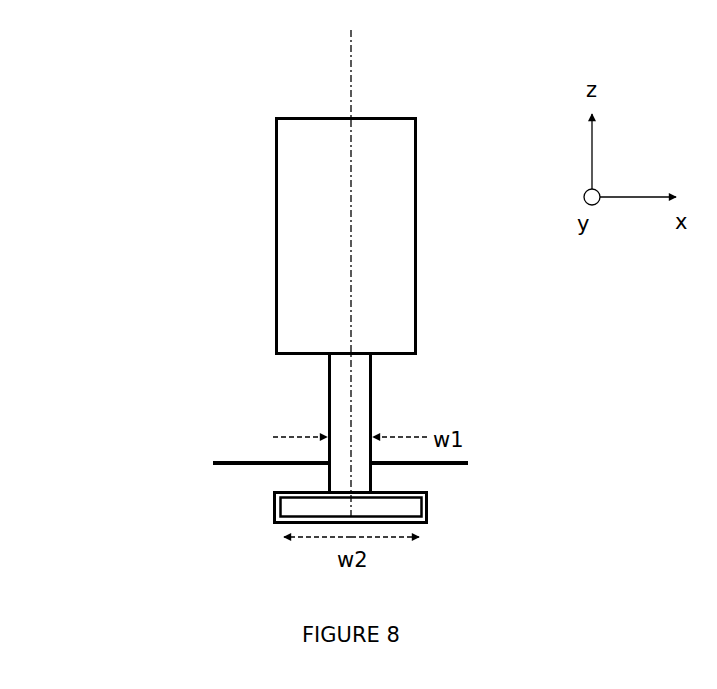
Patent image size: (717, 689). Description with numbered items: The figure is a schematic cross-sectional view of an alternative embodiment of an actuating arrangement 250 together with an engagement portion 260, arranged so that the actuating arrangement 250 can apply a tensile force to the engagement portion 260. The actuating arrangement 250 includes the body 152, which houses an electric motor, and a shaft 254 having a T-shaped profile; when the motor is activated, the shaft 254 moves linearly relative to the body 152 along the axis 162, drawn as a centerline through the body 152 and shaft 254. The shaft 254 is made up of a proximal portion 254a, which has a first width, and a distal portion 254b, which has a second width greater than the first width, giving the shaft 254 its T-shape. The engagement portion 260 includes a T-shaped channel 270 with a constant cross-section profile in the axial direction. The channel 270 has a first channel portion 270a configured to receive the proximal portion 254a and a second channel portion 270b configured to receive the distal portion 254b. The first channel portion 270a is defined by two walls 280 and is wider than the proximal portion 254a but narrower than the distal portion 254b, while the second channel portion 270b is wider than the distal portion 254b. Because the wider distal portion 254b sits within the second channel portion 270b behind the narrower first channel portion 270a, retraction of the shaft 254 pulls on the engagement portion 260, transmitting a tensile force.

The body 152 is at (292, 264).
The axis 162 is at (349, 60).
The actuating arrangement 250 is at (206, 110).
The shaft 254 is at (380, 388).
The proximal portion 254a is at (338, 412).
The distal portion 254b is at (430, 521).
The engagement portion 260 is at (213, 476).
The T-shaped channel 270 is at (260, 520).
The first channel portion 270a is at (455, 462).
The second channel portion 270b is at (272, 513).
The walls 280 is at (318, 478).